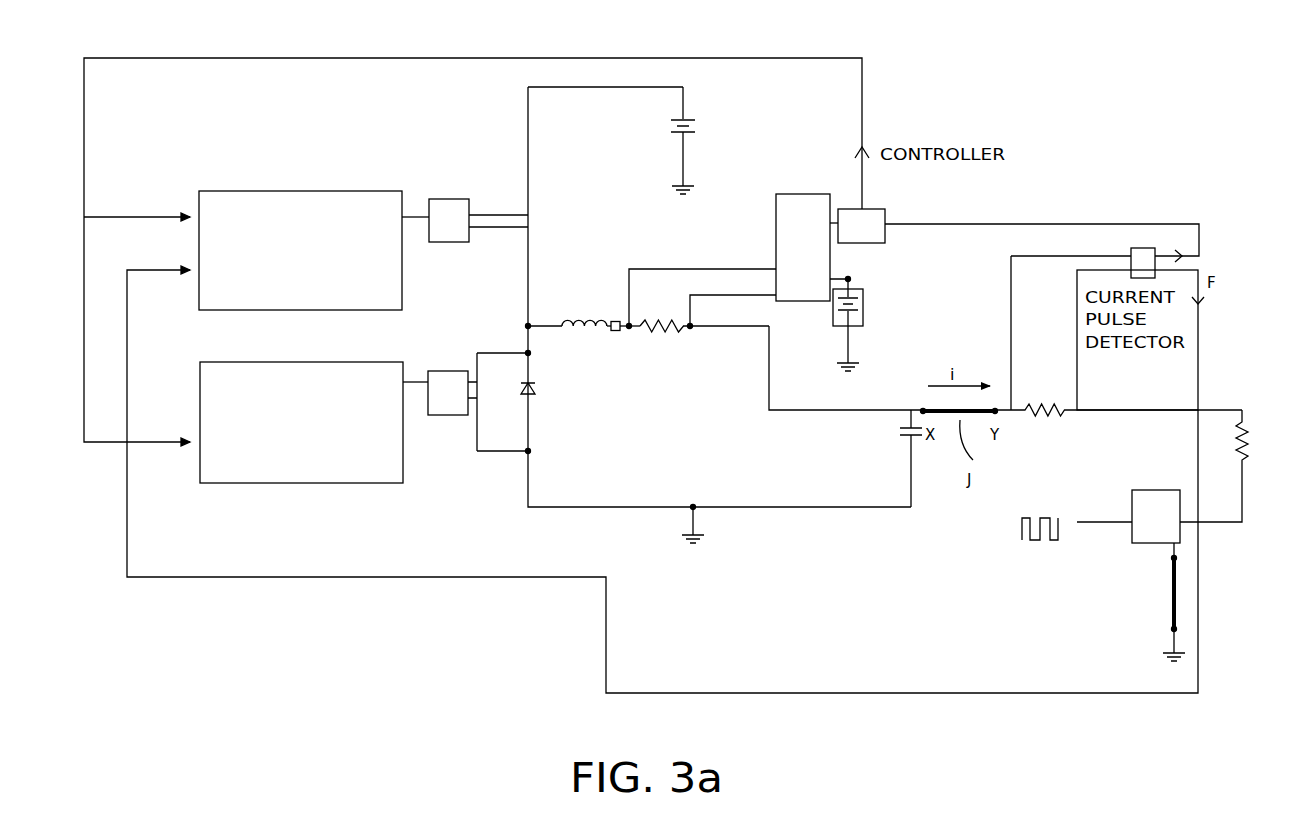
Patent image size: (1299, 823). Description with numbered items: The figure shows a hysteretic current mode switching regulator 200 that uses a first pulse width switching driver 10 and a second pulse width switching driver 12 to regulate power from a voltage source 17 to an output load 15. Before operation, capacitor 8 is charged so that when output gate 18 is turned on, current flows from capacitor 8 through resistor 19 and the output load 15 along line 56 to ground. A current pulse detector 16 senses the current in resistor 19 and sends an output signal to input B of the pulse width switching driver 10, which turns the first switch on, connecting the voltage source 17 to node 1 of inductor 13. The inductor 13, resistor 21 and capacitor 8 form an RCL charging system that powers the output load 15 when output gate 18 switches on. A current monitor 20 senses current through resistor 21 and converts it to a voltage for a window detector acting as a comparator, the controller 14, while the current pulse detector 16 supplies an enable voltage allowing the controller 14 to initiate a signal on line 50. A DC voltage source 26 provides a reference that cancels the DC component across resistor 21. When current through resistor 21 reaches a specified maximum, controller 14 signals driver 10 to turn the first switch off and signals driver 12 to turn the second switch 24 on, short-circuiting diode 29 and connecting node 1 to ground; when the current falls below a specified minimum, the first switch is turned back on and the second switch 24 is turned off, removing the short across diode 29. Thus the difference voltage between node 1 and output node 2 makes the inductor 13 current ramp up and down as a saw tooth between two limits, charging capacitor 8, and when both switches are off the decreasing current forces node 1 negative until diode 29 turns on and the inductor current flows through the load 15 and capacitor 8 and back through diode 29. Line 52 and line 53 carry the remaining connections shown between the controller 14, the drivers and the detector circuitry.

The switching regulator 200 is at (1035, 88).
The first pulse width switching driver 10 is at (272, 191).
The second pulse width switching driver 12 is at (280, 362).
The switch S2 24 is at (447, 199).
The inductor 13 is at (573, 291).
The node 1 is at (559, 315).
The output node 2 is at (615, 318).
The resistor 21 is at (662, 335).
The diode 29 is at (540, 387).
The voltage source 17 is at (668, 126).
The current monitor 20 is at (773, 242).
The controller 14 is at (853, 209).
The DC voltage source 26 is at (863, 322).
The capacitor 8 is at (900, 431).
The resistor 19 is at (1032, 405).
The current pulse detector 16 is at (1143, 248).
The output load 15 is at (1248, 438).
The output gate 18 is at (1147, 543).
The line 50 is at (493, 252).
The feedback line 52 is at (662, 479).
The enable line 53 is at (1050, 232).
The line 56 is at (1223, 541).